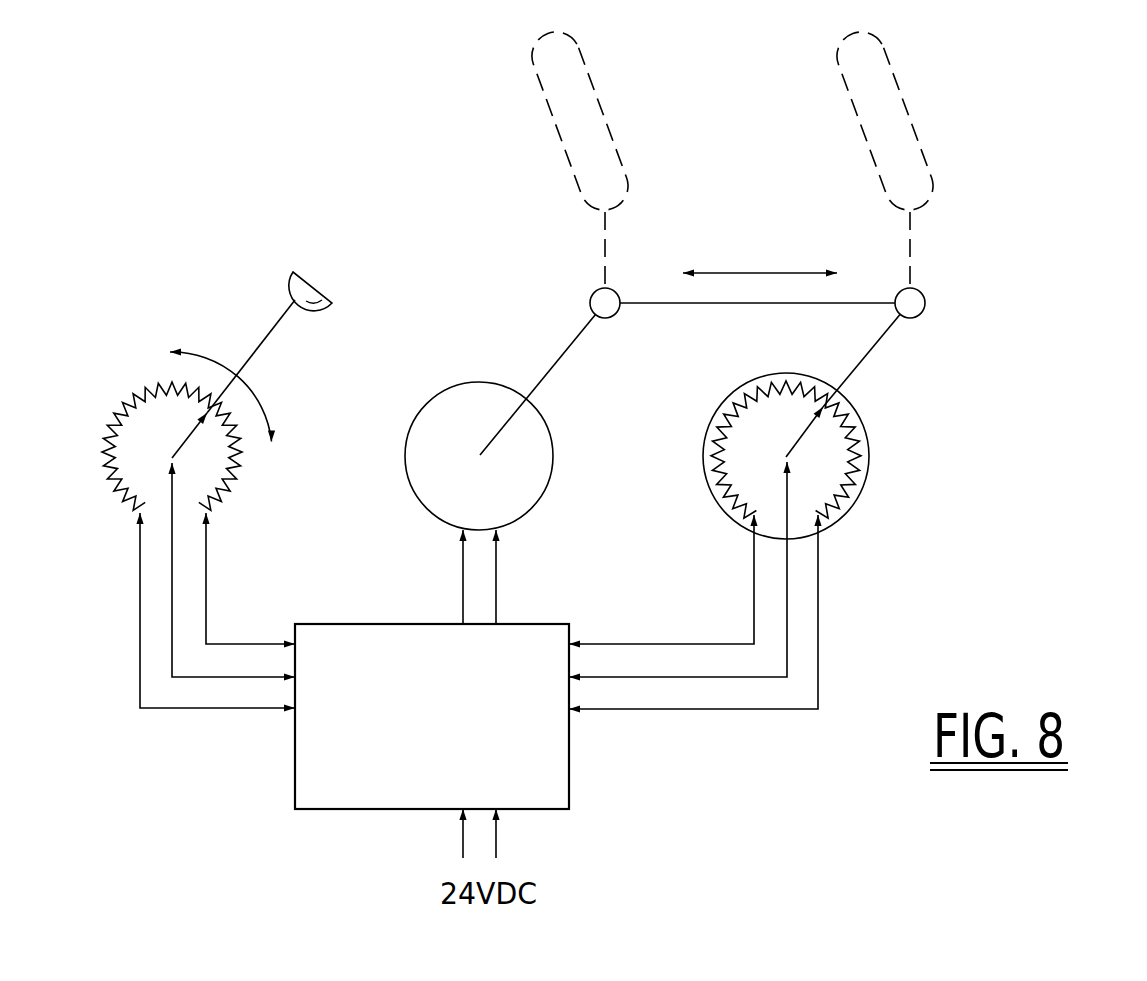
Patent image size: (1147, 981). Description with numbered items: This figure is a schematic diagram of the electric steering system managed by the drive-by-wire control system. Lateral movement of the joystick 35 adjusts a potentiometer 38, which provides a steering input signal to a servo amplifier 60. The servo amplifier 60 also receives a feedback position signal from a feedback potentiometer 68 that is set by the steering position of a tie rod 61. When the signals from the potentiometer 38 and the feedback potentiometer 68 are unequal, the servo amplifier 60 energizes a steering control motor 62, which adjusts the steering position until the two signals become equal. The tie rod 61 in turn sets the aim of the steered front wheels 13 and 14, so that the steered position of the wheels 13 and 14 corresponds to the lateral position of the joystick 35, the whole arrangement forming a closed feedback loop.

The steered front wheel 13 is at (898, 64).
The steered front wheel 14 is at (540, 92).
The joystick 35 is at (324, 279).
The potentiometer 38 is at (132, 404).
The servo amplifier 60 is at (322, 800).
The tie rod 61 is at (652, 302).
The steering control motor 62 is at (438, 405).
The feedback potentiometer 68 is at (857, 425).